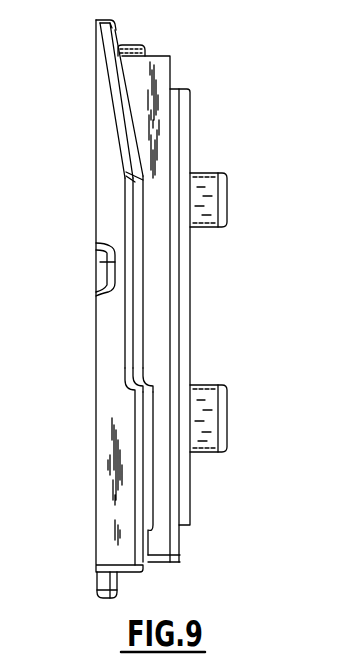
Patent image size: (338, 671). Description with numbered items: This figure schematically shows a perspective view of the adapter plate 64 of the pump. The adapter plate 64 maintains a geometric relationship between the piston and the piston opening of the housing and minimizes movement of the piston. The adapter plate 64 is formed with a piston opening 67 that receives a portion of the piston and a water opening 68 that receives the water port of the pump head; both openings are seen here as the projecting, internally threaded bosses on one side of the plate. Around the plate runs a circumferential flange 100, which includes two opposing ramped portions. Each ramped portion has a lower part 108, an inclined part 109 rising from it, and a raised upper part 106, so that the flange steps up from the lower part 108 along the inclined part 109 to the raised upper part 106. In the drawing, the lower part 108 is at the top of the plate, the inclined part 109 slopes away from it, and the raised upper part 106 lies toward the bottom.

The adapter plate 64 is at (235, 61).
The piston opening 67 is at (218, 420).
The water opening 68 is at (213, 200).
The circumferential flange 100 is at (113, 181).
The raised upper part 106 is at (152, 547).
The lower part 108 is at (114, 34).
The inclined part 109 is at (108, 90).